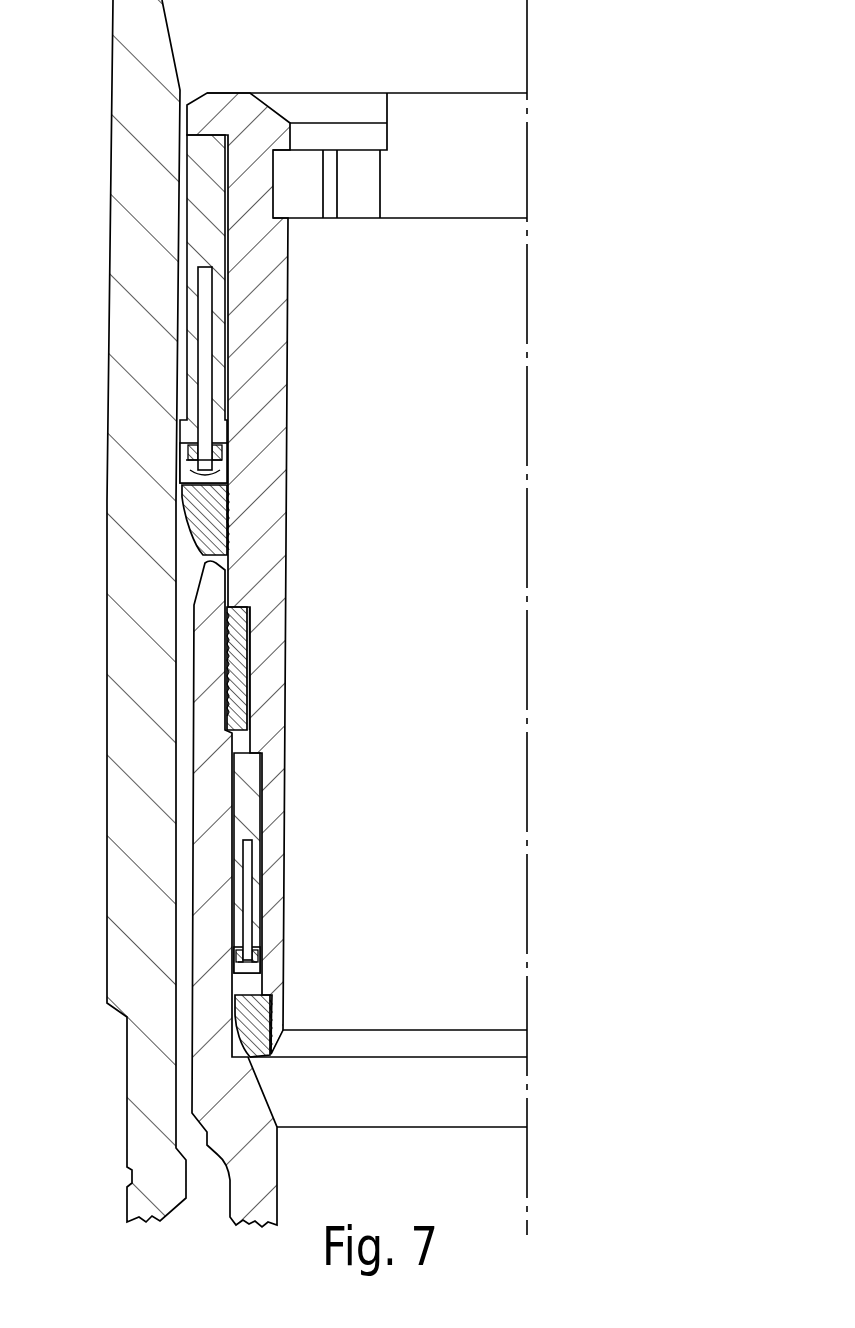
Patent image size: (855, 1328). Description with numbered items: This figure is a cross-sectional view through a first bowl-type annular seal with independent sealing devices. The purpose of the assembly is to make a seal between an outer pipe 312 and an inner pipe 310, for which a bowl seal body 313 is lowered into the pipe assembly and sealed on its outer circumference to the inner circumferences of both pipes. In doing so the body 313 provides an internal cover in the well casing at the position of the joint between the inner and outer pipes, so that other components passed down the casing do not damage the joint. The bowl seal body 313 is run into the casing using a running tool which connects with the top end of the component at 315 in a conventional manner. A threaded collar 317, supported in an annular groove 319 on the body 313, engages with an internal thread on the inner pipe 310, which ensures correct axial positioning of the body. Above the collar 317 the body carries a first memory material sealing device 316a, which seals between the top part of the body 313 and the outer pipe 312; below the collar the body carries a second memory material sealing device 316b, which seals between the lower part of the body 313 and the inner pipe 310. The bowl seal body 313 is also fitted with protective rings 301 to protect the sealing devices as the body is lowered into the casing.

The protective ring 301 is at (190, 510).
The inner pipe 310 is at (240, 1105).
The outer pipe 312 is at (132, 716).
The bowl seal body 313 is at (265, 492).
The top end of the body 315 is at (342, 108).
The first memory material sealing device 316a is at (207, 245).
The second memory material sealing device 316b is at (245, 792).
The threaded collar 317 is at (250, 653).
The annular groove 319 is at (250, 687).